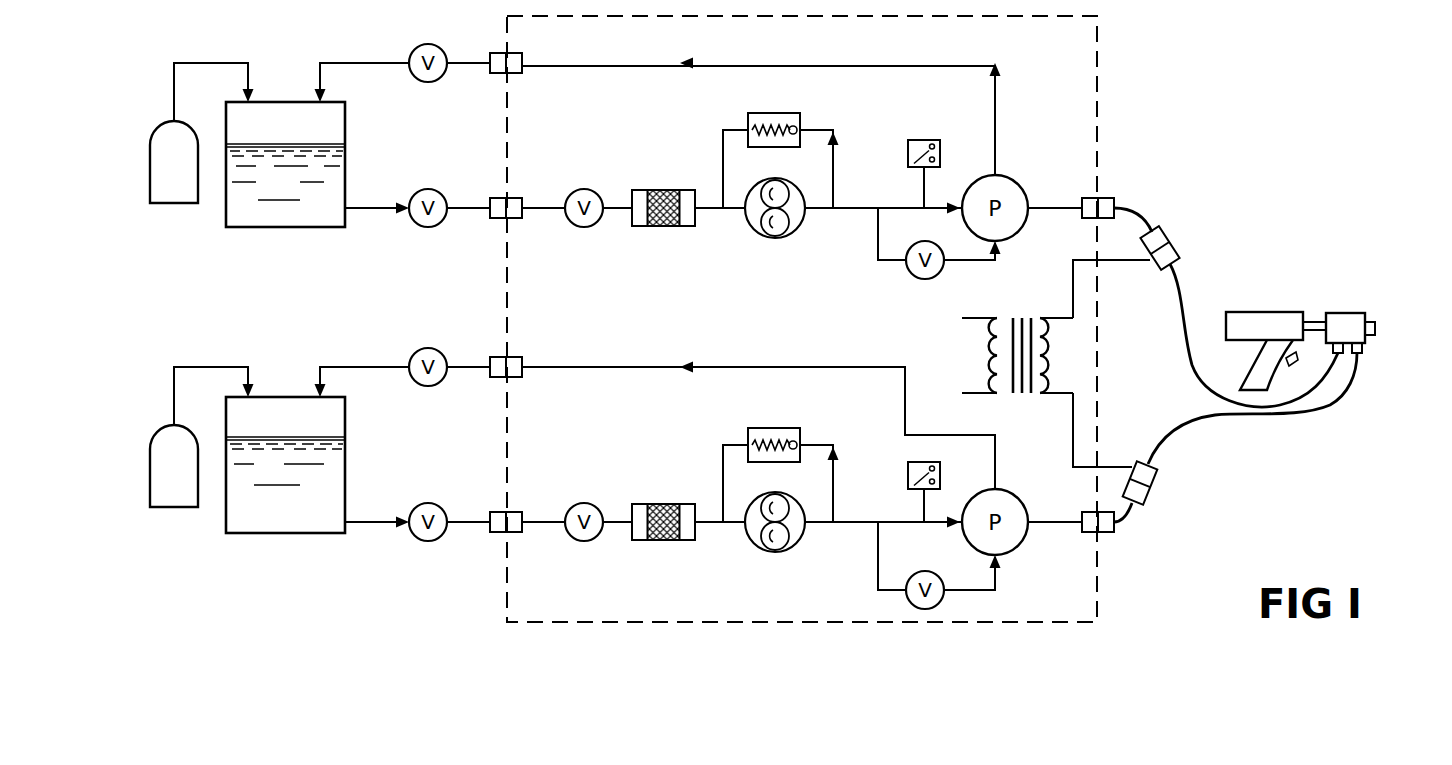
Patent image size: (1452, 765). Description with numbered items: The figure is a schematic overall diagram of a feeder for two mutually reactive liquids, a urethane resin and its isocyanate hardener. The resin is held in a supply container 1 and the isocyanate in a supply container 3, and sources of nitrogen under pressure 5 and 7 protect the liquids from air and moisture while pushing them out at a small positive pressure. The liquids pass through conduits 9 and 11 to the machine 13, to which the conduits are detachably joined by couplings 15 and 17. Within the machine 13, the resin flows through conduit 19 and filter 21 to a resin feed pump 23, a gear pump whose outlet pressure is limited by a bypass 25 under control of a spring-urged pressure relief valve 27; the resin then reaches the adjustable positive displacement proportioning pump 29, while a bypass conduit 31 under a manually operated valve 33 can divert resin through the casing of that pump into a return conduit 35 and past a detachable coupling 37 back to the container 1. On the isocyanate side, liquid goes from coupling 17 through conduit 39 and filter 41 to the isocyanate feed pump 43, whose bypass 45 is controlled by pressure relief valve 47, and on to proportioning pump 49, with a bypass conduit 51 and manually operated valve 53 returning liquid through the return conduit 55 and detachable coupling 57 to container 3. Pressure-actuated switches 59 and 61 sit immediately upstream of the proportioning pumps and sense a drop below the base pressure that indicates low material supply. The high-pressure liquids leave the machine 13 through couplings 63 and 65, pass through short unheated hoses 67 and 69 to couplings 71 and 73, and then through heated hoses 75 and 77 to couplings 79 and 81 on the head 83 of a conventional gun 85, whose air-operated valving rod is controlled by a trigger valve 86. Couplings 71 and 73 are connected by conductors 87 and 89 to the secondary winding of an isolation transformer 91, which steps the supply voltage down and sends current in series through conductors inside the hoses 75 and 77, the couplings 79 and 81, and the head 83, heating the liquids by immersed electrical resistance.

The supply container 1 is at (328, 478).
The supply container 3 is at (332, 176).
The source of nitrogen under pressure 5 is at (170, 507).
The source of nitrogen under pressure 7 is at (168, 203).
The conduit 9 is at (470, 522).
The conduit 11 is at (478, 208).
The machine 13 is at (585, 622).
The coupling 15 is at (514, 512).
The coupling 17 is at (514, 218).
The conduit 19 is at (612, 522).
The filter 21 is at (660, 504).
The resin feed pump 23 is at (752, 542).
The bypass 25 is at (833, 485).
The pressure relief valve 27 is at (768, 428).
The proportioning pump 29 is at (1018, 546).
The bypass conduit 31 is at (878, 556).
The manually operated valve 33 is at (938, 574).
The return conduit 35 is at (740, 367).
The detachable coupling 37 is at (514, 357).
The conduit 39 is at (540, 208).
The filter 41 is at (677, 176).
The isocyanate feed pump 43 is at (752, 228).
The bypass 45 is at (833, 172).
The pressure relief valve 47 is at (768, 113).
The proportioning pump 49 is at (1013, 228).
The bypass conduit 51 is at (878, 238).
The manually operated valve 53 is at (912, 274).
The return conduit 55 is at (740, 45).
The detachable coupling 57 is at (514, 53).
The pressure-actuated switch 59 is at (952, 458).
The pressure-actuated switch 61 is at (916, 140).
The coupling 63 is at (1110, 532).
The coupling 65 is at (1106, 198).
The unheated hose 67 is at (1126, 514).
The unheated hose 69 is at (1140, 212).
The coupling 71 is at (1152, 483).
The coupling 73 is at (1172, 250).
The heated hose 75 is at (1214, 415).
The heated hose 77 is at (1183, 334).
The coupling 79 is at (1362, 355).
The coupling 81 is at (1333, 358).
The head 83 is at (1345, 313).
The gun 85 is at (1266, 317).
The trigger valve 86 is at (1290, 366).
The conductor 87 is at (1073, 445).
The conductor 89 is at (1073, 293).
The isolation transformer 91 is at (1016, 314).